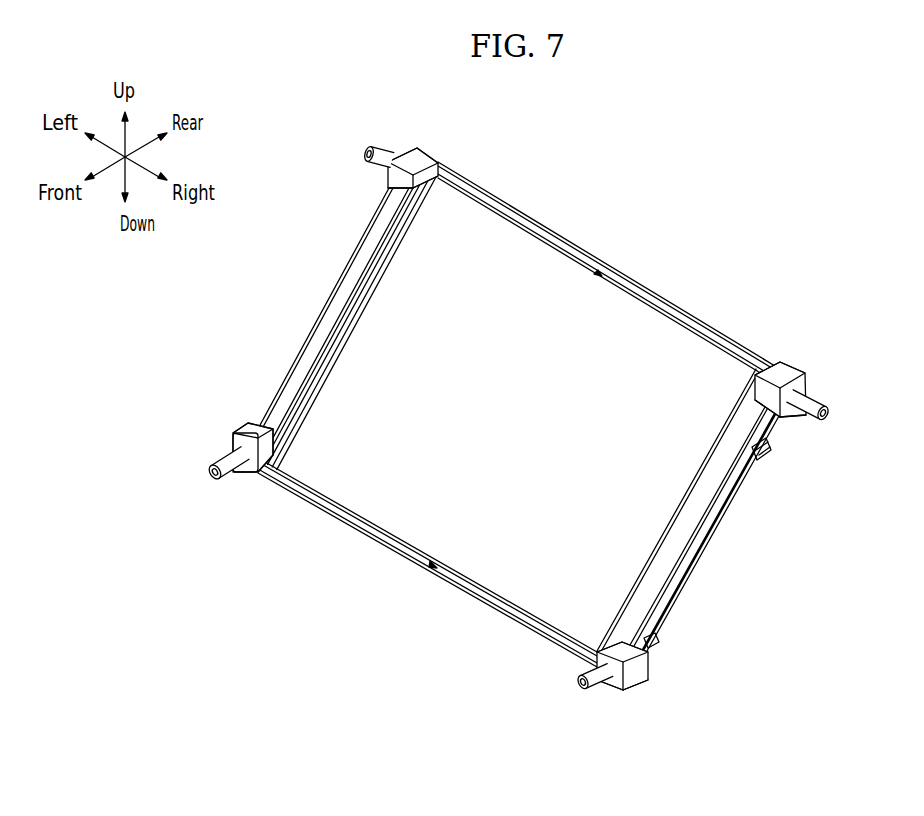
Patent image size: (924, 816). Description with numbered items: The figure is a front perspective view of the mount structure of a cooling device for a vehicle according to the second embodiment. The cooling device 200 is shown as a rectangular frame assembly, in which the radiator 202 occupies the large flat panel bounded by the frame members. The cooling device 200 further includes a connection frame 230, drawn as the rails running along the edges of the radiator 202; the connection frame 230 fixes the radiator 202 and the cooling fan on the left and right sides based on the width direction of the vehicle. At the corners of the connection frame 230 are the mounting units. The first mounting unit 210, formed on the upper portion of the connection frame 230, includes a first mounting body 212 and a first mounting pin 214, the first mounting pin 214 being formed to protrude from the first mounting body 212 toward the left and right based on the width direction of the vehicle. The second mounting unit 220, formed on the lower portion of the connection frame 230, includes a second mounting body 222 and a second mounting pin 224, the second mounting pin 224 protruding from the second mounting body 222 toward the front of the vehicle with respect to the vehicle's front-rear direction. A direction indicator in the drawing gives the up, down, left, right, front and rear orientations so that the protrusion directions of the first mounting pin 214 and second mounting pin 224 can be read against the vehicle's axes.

The cooling device 200 is at (592, 224).
The radiator 202 is at (630, 320).
The first mounting unit 210 is at (317, 97).
The first mounting body 212 is at (408, 157).
The first mounting pin 214 is at (377, 158).
The second mounting unit 220 is at (170, 397).
The second mounting body 222 is at (248, 428).
The second mounting pin 224 is at (228, 463).
The connection frame 230 is at (320, 333).